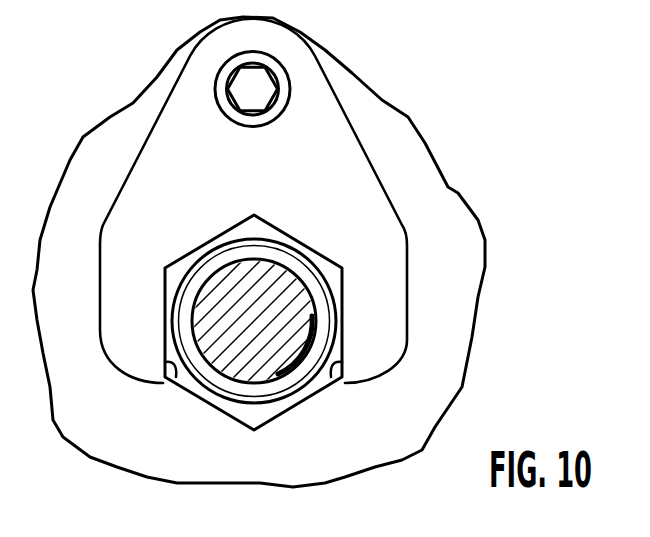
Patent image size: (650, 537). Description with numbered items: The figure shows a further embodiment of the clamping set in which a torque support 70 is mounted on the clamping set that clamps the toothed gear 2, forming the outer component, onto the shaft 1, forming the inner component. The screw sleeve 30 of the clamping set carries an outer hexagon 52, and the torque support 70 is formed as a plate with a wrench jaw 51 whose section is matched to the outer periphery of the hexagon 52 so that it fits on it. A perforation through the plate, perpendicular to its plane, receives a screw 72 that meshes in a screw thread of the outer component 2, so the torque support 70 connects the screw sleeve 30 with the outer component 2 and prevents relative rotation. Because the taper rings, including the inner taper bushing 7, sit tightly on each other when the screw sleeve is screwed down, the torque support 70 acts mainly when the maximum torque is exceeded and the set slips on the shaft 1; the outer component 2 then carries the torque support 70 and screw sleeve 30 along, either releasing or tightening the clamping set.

The shaft 1 is at (200, 323).
The toothed gear 2 is at (455, 192).
The inner taper bushing 7 is at (313, 293).
The screw sleeve 30 is at (262, 228).
The wrench jaw 51 is at (175, 383).
The hexagon 52 is at (302, 407).
The torque support 70 is at (127, 377).
The screw 72 is at (247, 117).